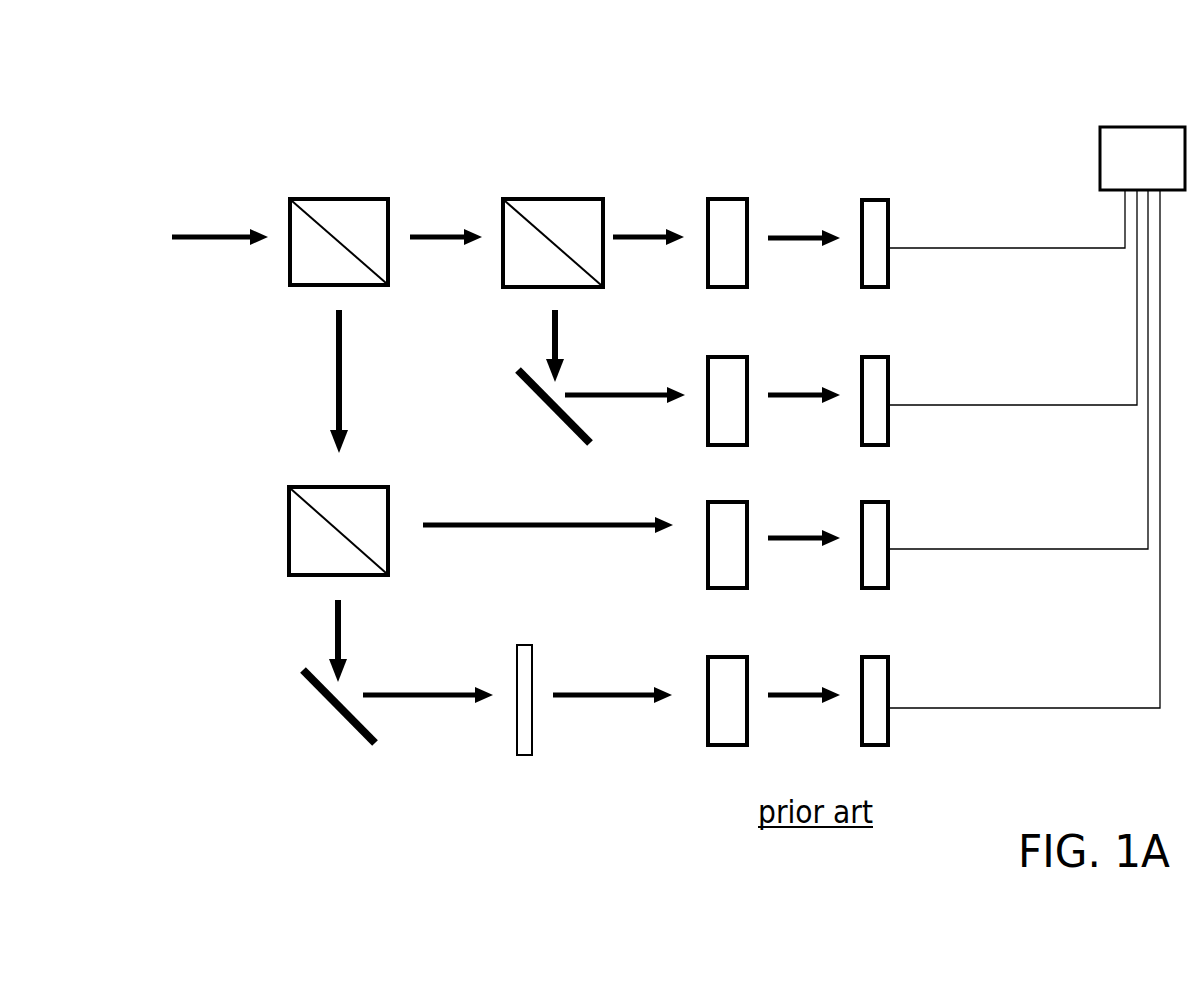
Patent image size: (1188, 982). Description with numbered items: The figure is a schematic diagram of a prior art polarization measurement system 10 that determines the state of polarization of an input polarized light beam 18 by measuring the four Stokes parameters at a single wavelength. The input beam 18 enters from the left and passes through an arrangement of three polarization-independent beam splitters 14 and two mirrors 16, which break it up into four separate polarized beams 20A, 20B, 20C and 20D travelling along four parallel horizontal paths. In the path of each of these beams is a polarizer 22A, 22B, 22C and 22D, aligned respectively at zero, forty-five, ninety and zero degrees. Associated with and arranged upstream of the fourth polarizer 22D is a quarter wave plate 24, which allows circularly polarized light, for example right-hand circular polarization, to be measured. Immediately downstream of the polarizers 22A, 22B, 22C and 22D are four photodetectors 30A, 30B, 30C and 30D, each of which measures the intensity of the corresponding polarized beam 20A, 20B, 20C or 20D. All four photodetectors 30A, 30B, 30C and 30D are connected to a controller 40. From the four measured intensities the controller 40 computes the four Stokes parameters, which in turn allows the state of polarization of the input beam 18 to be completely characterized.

The polarization measurement system 10 is at (914, 108).
The polarization-independent beam splitter 14 is at (325, 199).
The mirror 16 is at (546, 398).
The input polarized light beam 18 is at (218, 230).
The polarized beam 20A is at (627, 230).
The polarized beam 20B is at (613, 390).
The polarized beam 20C is at (603, 520).
The polarized beam 20D is at (588, 690).
The polarizer 22A is at (748, 222).
The polarizer 22B is at (748, 382).
The polarizer 22C is at (748, 512).
The polarizer 22D is at (748, 670).
The quarter wave plate 24 is at (533, 755).
The photodetector 30A is at (889, 237).
The photodetector 30B is at (889, 380).
The photodetector 30C is at (889, 525).
The photodetector 30D is at (889, 682).
The controller 40 is at (1100, 165).